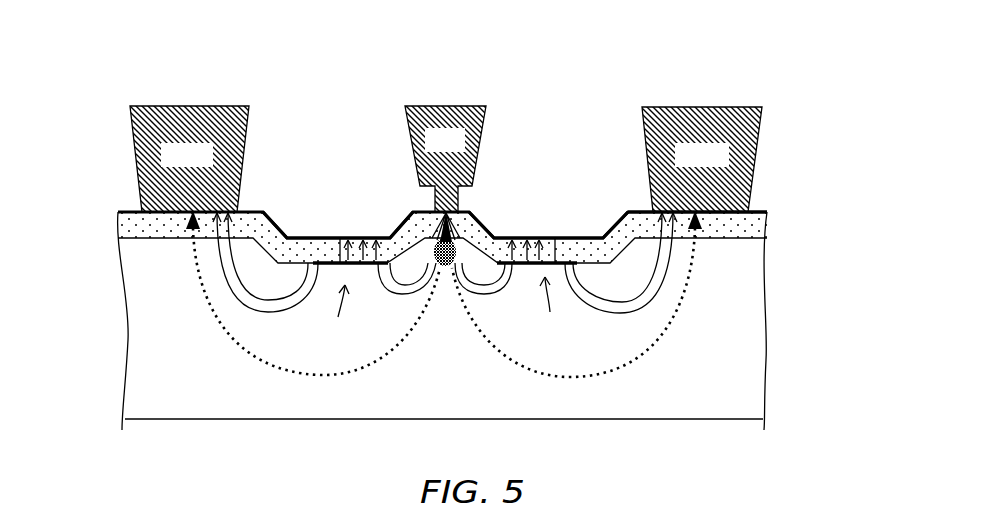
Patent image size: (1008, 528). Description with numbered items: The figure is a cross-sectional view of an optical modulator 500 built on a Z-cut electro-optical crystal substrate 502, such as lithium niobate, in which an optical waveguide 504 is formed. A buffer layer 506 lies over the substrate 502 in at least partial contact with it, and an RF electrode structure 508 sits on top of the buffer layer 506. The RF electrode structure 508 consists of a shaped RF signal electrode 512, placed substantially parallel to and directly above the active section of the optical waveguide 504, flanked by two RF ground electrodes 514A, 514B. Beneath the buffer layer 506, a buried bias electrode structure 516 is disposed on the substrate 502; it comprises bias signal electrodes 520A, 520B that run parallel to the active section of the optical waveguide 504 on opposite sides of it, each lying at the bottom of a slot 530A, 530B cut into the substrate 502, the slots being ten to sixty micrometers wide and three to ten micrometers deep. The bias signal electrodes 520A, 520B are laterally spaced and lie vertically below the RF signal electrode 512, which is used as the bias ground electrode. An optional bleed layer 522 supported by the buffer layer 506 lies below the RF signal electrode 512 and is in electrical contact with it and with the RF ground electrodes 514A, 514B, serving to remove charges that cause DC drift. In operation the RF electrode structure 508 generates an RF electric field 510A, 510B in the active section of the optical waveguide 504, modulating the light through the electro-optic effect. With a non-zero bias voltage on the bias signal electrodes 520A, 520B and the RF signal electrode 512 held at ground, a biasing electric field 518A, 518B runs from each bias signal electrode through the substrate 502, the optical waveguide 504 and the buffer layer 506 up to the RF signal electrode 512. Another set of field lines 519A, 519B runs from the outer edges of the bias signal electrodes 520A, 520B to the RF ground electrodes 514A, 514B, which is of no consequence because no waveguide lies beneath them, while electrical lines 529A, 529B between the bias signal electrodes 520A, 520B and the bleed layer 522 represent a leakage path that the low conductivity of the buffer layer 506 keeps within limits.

The optical modulator 500 is at (572, 56).
The Z-cut electro-optical crystal substrate 502 is at (733, 406).
The optical waveguide 504 is at (447, 305).
The buffer layer 506 is at (767, 218).
The RF electrode structure 508 is at (400, 65).
The RF electric field 510A is at (255, 356).
The RF electric field 510B is at (633, 356).
The shaped RF signal electrode 512 is at (462, 149).
The RF ground electrode 514A is at (210, 164).
The RF ground electrode 514B is at (725, 164).
The buried bias electrode structure 516 is at (451, 311).
The biasing electric field 518A is at (392, 294).
The biasing electric field 518B is at (491, 292).
The field lines 519A is at (247, 299).
The field lines 519B is at (648, 298).
The bias signal electrode 520A is at (341, 238).
The bias signal electrode 520B is at (555, 238).
The bleed layer 522 is at (758, 212).
The electrical lines 529A is at (373, 238).
The electrical lines 529B is at (508, 238).
The slot 530A is at (359, 157).
The slot 530B is at (540, 155).